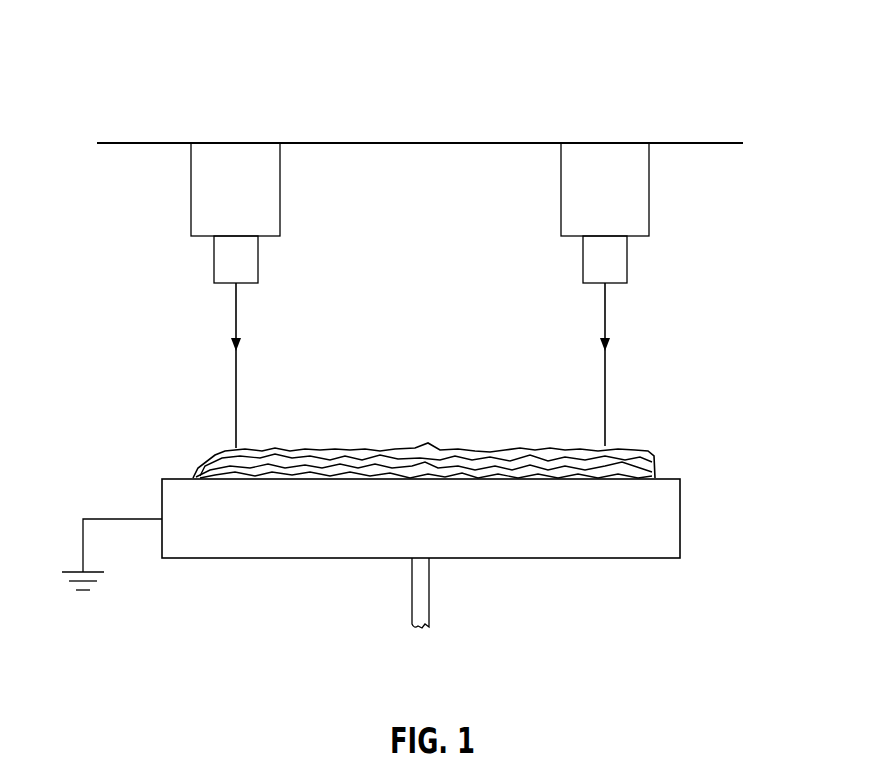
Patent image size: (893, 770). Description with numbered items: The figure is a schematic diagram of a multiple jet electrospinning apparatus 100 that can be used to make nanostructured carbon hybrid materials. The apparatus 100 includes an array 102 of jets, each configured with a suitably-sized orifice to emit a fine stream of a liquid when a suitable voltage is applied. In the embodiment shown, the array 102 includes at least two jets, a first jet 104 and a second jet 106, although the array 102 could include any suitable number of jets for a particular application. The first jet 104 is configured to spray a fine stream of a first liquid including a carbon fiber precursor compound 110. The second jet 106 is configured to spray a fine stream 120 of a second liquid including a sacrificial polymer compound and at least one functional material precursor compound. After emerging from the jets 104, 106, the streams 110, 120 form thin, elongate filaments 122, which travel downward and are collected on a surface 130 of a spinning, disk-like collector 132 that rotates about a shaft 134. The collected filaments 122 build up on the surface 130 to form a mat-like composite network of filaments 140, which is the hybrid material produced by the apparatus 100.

The multiple jet electrospinning apparatus 100 is at (436, 54).
The array of jets 102 is at (128, 187).
The first jet 104 is at (280, 189).
The second jet 106 is at (649, 189).
The stream of first liquid including carbon fiber precursor compound 110 is at (233, 375).
The stream of second liquid 120 is at (607, 395).
The filaments 122 is at (318, 448).
The surface of collector 130 is at (175, 479).
The disk-like collector 132 is at (680, 518).
The shaft 134 is at (430, 592).
The composite network of filaments 140 is at (193, 442).